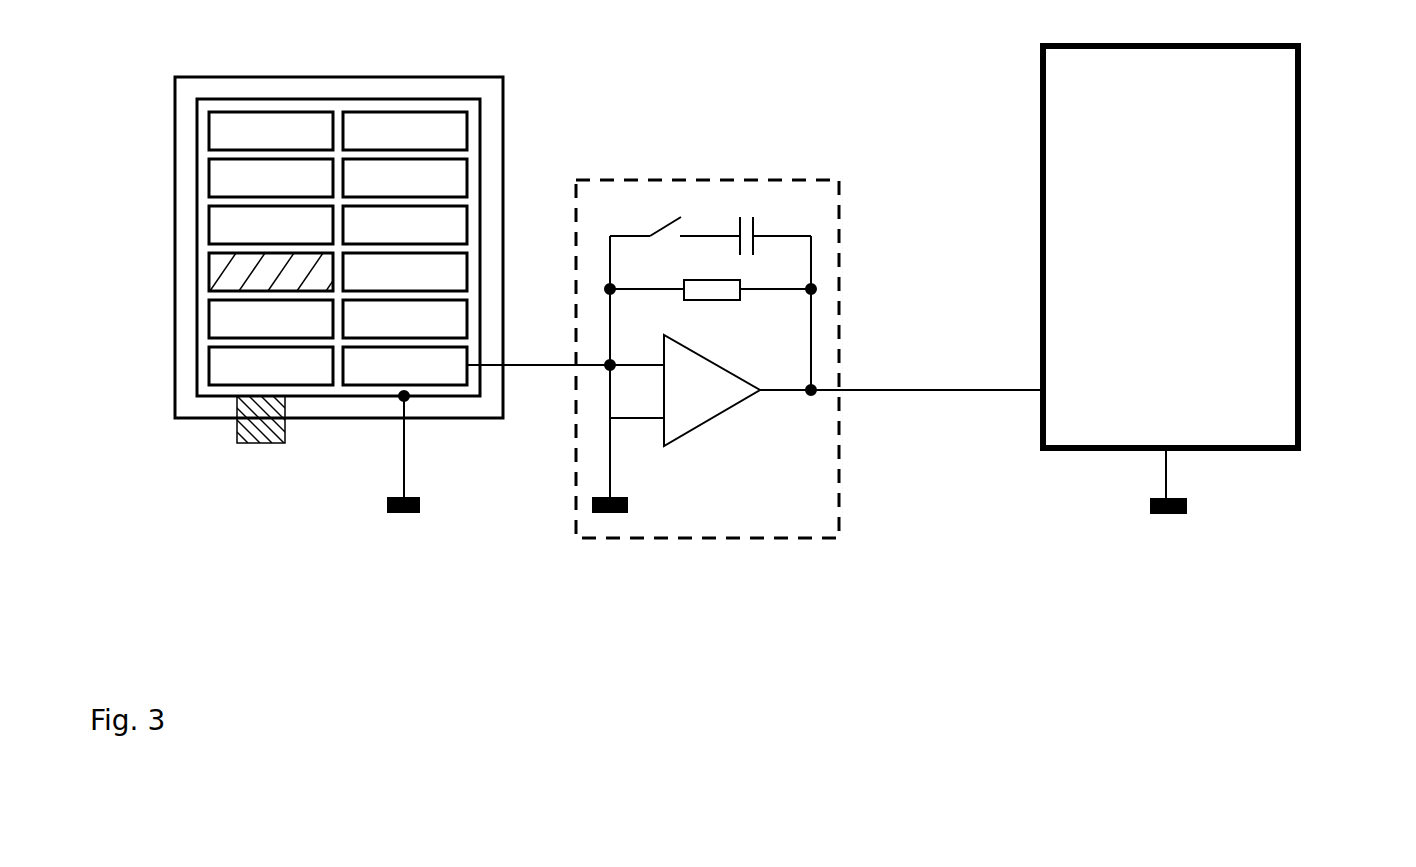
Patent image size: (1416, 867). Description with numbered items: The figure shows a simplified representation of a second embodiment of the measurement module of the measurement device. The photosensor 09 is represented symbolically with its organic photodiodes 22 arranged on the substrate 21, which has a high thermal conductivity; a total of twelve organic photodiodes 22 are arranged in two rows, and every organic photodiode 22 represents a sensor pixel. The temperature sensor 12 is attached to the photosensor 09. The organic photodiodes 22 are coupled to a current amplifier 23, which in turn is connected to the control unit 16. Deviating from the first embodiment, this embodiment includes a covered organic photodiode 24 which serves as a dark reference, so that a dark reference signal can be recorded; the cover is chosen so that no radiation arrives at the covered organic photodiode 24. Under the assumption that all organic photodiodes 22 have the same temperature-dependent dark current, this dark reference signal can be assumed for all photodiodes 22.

The photosensor 09 is at (155, 375).
The temperature sensor 12 is at (248, 437).
The control unit 16 is at (1277, 355).
The substrate 21 is at (333, 408).
The organic photodiodes 22 is at (305, 127).
The current amplifier 23 is at (595, 562).
The covered organic photodiode 24 is at (213, 265).